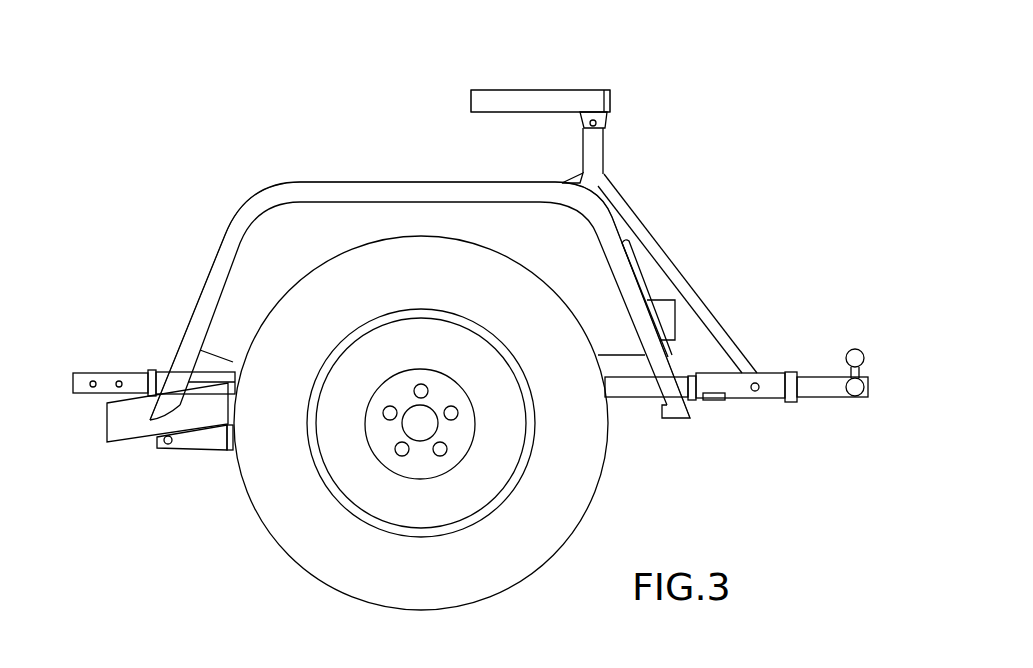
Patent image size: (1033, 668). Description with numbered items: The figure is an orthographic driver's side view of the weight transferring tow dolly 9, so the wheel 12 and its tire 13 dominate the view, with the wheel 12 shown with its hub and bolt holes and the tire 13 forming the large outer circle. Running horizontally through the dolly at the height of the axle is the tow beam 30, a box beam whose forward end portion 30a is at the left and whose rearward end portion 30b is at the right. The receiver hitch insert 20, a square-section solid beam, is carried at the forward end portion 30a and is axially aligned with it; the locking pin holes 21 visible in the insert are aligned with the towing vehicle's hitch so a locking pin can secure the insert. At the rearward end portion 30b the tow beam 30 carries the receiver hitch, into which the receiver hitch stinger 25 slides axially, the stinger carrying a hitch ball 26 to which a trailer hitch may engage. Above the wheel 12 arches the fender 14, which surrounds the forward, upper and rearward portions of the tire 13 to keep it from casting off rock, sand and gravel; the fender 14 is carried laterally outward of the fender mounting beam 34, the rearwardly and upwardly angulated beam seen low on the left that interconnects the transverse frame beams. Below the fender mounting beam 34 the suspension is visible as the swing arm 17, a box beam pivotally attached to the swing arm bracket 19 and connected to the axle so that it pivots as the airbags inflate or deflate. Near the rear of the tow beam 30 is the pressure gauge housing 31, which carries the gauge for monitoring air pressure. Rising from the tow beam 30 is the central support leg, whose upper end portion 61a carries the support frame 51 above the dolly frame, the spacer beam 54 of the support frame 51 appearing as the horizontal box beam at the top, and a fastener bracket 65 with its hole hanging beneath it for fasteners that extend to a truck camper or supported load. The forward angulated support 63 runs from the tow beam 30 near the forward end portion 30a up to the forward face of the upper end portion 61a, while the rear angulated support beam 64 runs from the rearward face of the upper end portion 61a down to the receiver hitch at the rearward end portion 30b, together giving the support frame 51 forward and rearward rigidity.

The weight transferring tow dolly 9 is at (240, 189).
The wheel 12 is at (353, 509).
The tire 13 is at (512, 575).
The fender 14 is at (465, 185).
The swing arm 17 is at (200, 450).
The swing arm bracket 19 is at (168, 445).
The receiver hitch insert 20 is at (80, 394).
The locking pin holes 21 is at (93, 379).
The receiver hitch stinger 25 is at (830, 398).
The hitch ball 26 is at (855, 349).
The tow beam 30 is at (627, 385).
The forward end portion of the tow beam 30a is at (157, 372).
The rearward end portion of the tow beam 30b is at (770, 398).
The pressure gauge housing 31 is at (657, 312).
The fender mounting beam 34 is at (120, 432).
The support frame 51 is at (612, 90).
The spacer beam 54 is at (490, 97).
The upper end portion of support leg 61a is at (597, 152).
The forward angulated support 63 is at (568, 178).
The rear angulated support beam 64 is at (697, 302).
The fastener bracket 65 is at (610, 120).